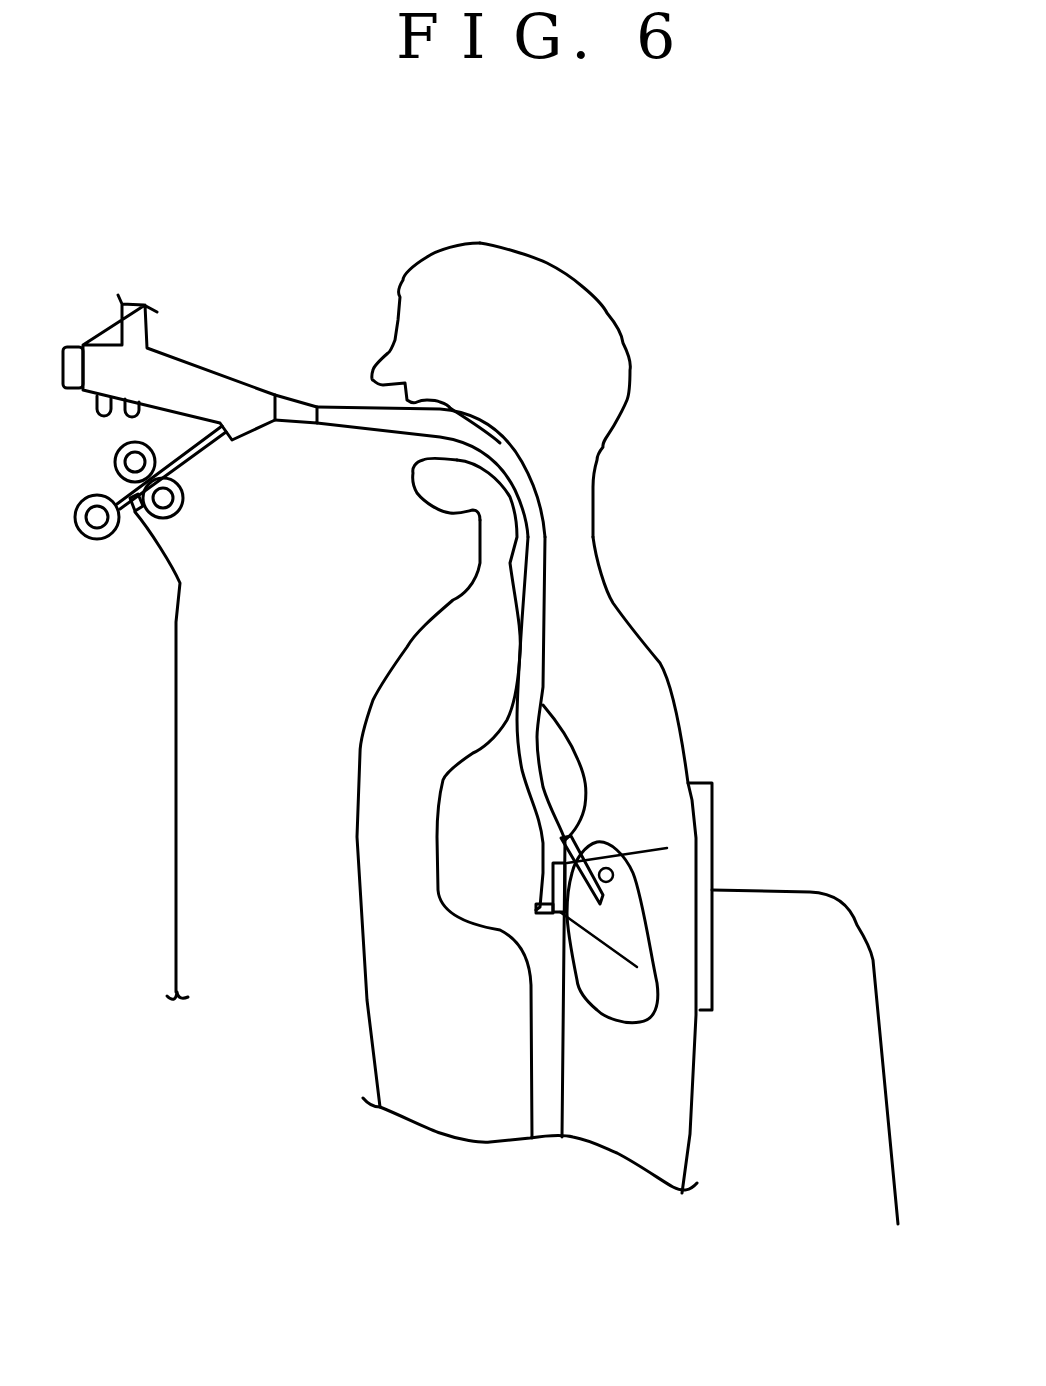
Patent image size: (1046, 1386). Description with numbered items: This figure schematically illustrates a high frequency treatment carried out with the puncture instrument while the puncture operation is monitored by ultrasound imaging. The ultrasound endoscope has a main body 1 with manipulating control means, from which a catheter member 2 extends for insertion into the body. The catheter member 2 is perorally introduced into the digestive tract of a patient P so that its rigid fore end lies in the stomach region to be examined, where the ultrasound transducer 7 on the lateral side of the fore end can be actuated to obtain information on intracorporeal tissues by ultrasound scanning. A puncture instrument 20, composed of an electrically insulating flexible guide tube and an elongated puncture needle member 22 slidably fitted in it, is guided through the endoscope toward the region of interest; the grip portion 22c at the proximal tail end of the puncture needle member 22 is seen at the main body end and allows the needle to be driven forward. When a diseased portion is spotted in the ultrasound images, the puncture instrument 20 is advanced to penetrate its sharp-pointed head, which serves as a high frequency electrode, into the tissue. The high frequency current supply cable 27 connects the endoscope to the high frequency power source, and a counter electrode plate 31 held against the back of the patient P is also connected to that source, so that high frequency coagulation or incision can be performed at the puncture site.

The main body 1 is at (187, 367).
The catheter member 2 is at (390, 431).
The puncture instrument 20 is at (182, 466).
The puncture needle member 22 is at (603, 903).
The grip portion 22c is at (97, 539).
The high frequency current supply cable 27 is at (172, 855).
The ultrasound transducer 7 is at (535, 905).
The counter electrode plate 31 is at (713, 813).
The patient P is at (653, 645).